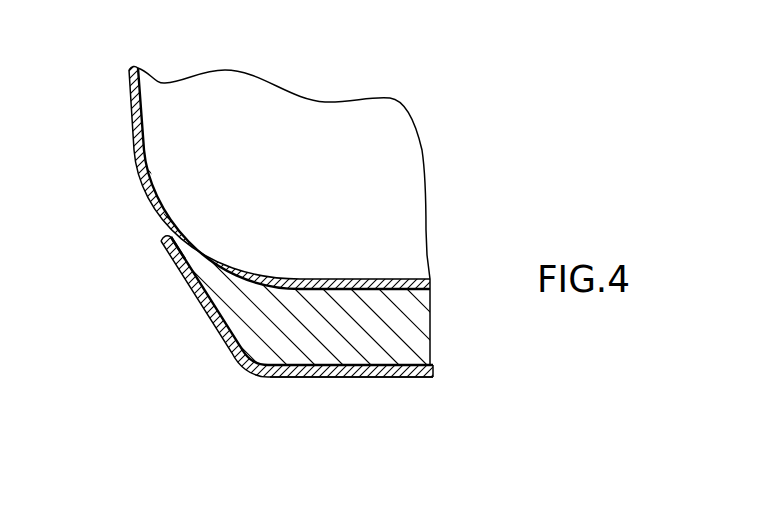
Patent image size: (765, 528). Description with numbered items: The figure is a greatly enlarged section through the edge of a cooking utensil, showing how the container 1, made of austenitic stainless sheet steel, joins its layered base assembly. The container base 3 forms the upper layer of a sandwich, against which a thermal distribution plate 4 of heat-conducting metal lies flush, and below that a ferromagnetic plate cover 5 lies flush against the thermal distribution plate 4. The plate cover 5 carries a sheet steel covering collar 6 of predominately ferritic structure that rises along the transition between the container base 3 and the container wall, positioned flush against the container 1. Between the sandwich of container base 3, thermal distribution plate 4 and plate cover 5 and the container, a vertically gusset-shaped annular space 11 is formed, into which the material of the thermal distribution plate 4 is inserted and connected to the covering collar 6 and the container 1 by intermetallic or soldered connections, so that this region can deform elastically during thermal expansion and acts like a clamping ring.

The container 1 is at (120, 123).
The container base 3 is at (363, 277).
The thermal distribution plate 4 is at (410, 317).
The plate cover 5 is at (346, 392).
The covering collar 6 is at (197, 313).
The gusset-shaped annular space 11 is at (183, 280).